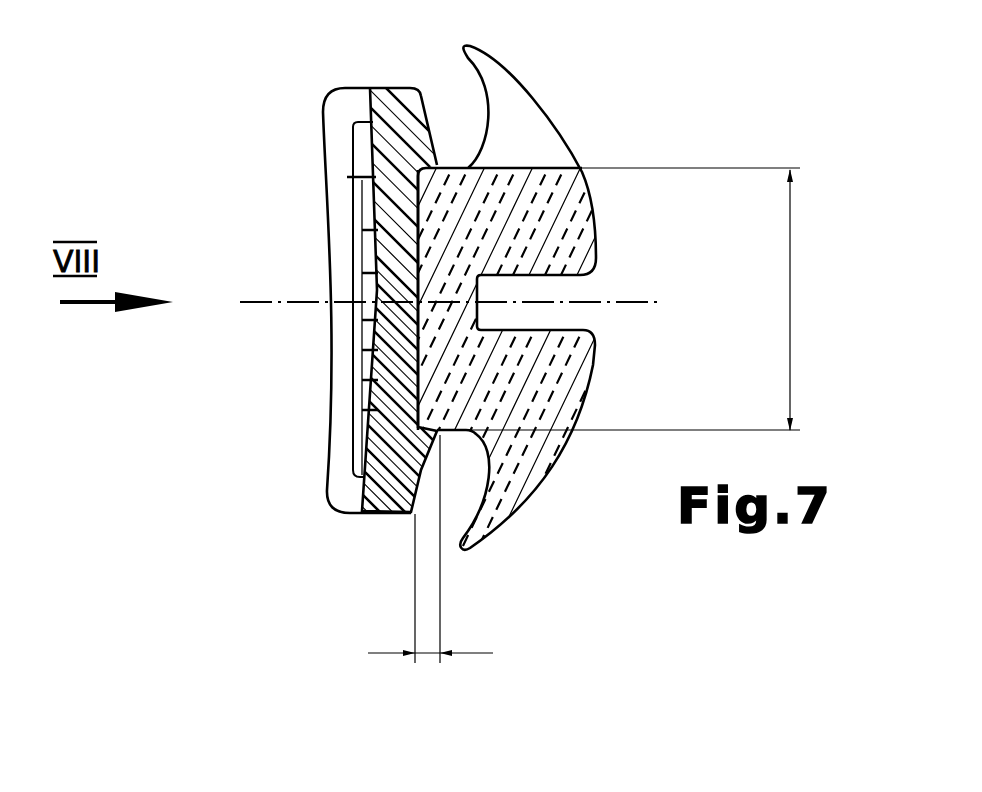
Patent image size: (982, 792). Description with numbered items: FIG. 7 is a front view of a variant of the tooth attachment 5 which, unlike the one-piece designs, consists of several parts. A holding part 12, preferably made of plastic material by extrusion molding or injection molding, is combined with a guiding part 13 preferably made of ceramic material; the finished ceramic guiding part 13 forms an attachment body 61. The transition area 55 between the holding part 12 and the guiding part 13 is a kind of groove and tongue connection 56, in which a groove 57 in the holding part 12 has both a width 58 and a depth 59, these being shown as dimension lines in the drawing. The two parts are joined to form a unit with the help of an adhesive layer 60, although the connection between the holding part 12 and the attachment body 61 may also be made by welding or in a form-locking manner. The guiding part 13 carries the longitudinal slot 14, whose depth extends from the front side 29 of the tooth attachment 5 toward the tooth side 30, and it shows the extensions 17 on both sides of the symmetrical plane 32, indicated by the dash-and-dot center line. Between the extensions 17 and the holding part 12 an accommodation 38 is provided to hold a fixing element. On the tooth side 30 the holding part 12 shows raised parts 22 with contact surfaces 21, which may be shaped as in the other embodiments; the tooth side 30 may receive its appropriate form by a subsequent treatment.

The tooth attachment 5 is at (236, 562).
The holding part 12 is at (386, 492).
The guiding part 13 is at (548, 372).
The longitudinal slot 14 is at (615, 290).
The extensions 17 is at (513, 108).
The contact surface 21 is at (355, 178).
The raised parts 22 is at (343, 200).
The front side 29 is at (665, 306).
The tooth side 30 is at (210, 357).
The symmetrical plane 32 is at (248, 297).
The accommodation 38 is at (442, 103).
The transition area 55 is at (396, 384).
The groove and tongue connection 56 is at (460, 221).
The groove 57 is at (405, 352).
The width 58 is at (793, 308).
The depth 59 is at (431, 657).
The adhesive layer 60 is at (388, 445).
The attachment body 61 is at (657, 199).